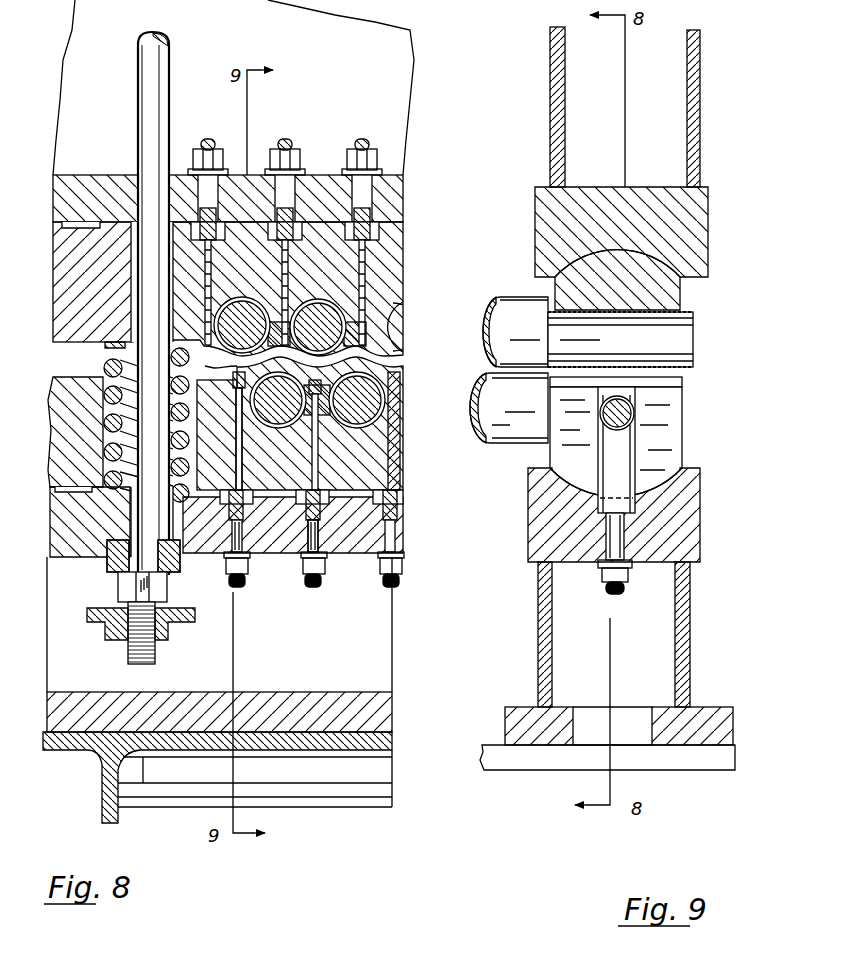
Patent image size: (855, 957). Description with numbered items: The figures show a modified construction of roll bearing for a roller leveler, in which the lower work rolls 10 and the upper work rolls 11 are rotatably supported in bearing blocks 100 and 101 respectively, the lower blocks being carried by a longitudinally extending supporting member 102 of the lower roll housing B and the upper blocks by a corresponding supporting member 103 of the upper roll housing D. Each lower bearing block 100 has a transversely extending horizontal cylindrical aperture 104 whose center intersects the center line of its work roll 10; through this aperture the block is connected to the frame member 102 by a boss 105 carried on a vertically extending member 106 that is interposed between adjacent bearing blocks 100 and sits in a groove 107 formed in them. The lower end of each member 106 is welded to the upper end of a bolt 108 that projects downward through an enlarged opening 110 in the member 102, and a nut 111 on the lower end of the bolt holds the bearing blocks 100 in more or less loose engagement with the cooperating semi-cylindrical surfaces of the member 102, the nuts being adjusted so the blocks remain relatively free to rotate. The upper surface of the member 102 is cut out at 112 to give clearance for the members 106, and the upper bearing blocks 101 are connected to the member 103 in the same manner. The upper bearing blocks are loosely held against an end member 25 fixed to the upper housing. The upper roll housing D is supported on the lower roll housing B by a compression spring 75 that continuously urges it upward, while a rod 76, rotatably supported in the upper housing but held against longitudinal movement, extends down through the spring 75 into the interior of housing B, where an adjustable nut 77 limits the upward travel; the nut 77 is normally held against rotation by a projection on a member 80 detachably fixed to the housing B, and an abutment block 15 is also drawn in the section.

In FIG. 8, the work roll 10 is at (266, 422).
In FIG. 9, the work roll 10 is at (495, 446).
In FIG. 8, the work roll 11 is at (236, 300).
In FIG. 9, the work roll 11 is at (530, 297).
In FIG. 8, the spring abutment block 15 is at (73, 420).
In FIG. 8, the end member 25 is at (66, 278).
In FIG. 8, the compression spring 75 is at (105, 367).
In FIG. 8, the rod 76 is at (149, 92).
In FIG. 8, the adjustable nut 77 is at (120, 586).
In FIG. 8, the member 80 is at (186, 622).
In FIG. 8, the bearing block 100 is at (396, 474).
In FIG. 9, the bearing block 100 is at (670, 435).
In FIG. 8, the bearing block 101 is at (388, 273).
In FIG. 9, the bearing block 101 is at (690, 297).
In FIG. 8, the supporting member 102 is at (62, 527).
In FIG. 9, the supporting member 102 is at (702, 519).
In FIG. 8, the supporting member 103 is at (60, 174).
In FIG. 8, the cylindrical aperture 104 is at (217, 367).
In FIG. 8, the boss 105 is at (217, 435).
In FIG. 9, the boss 105 is at (607, 416).
In FIG. 8, the vertically extending member 106 is at (236, 464).
In FIG. 9, the vertically extending member 106 is at (622, 463).
In FIG. 9, the groove 107 is at (640, 391).
In FIG. 8, the bolt 108 is at (321, 532).
In FIG. 9, the bolt 108 is at (626, 540).
In FIG. 8, the enlarged opening 110 is at (252, 556).
In FIG. 8, the nut 111 is at (326, 560).
In FIG. 8, the cut-out 112 is at (336, 494).
In FIG. 8, the upper roll housing D is at (403, 90).
In FIG. 9, the upper roll housing D is at (550, 90).
In FIG. 8, the lower roll housing B is at (367, 681).
In FIG. 9, the lower roll housing B is at (540, 622).